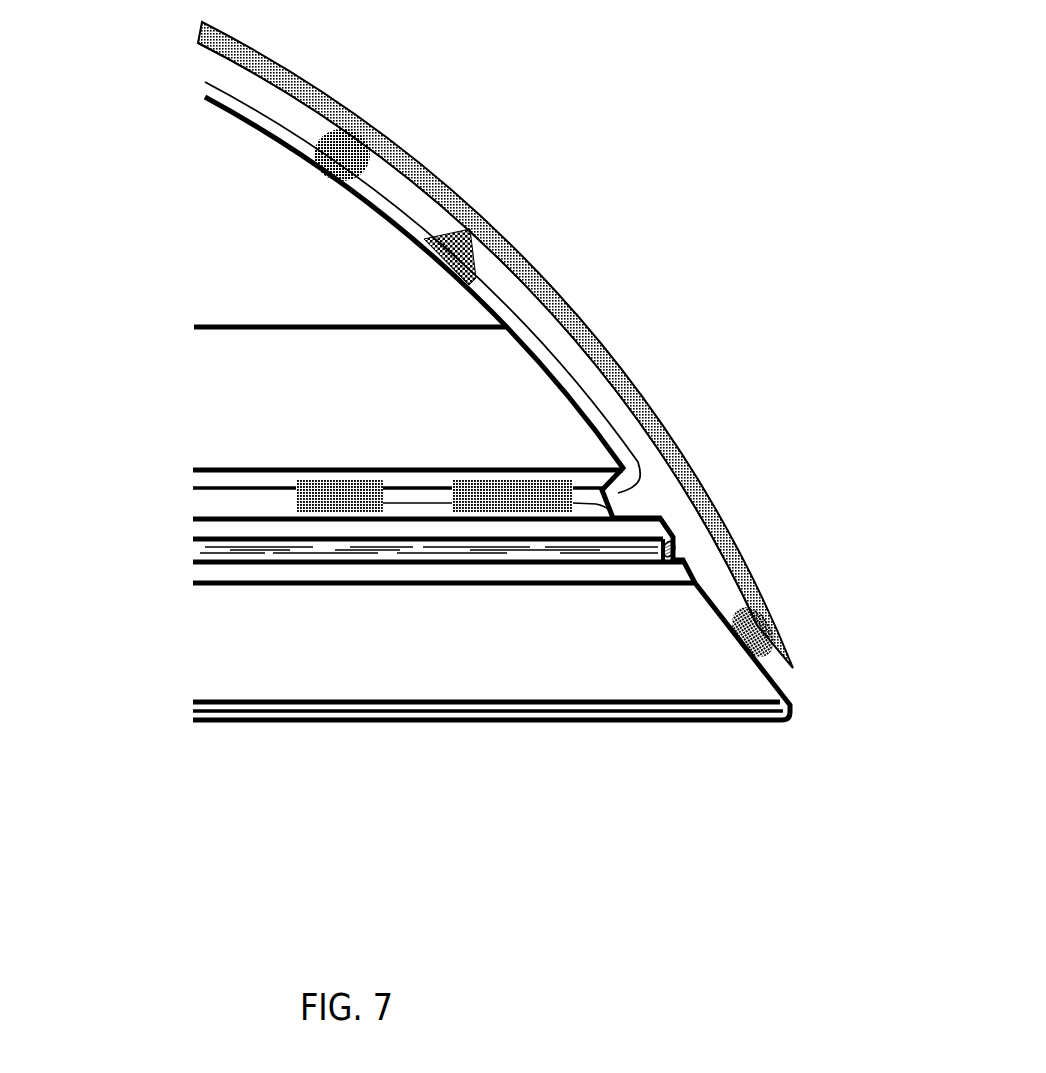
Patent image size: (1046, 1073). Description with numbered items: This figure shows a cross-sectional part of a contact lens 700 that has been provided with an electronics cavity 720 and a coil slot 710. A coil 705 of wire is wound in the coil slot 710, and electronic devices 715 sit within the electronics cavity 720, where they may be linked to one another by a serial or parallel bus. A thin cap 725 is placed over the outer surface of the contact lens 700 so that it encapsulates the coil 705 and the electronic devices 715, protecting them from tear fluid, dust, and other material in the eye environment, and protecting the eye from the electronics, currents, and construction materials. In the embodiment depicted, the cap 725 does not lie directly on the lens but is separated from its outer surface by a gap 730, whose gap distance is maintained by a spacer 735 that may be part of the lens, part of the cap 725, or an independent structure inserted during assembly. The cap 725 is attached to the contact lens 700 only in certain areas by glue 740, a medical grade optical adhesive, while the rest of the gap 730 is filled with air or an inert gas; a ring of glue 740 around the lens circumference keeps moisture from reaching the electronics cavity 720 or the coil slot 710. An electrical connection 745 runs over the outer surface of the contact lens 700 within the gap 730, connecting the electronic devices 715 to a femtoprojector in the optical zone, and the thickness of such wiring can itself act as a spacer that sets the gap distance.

The contact lens 700 is at (365, 281).
The coil 705 is at (684, 548).
The coil slot 710 is at (178, 544).
The electronic devices 715 is at (462, 478).
The electronics cavity 720 is at (180, 518).
The cap 725 is at (405, 147).
The gap 730 is at (542, 326).
The spacer 735 is at (478, 262).
The glue 740 is at (320, 133).
The electrical connection 745 is at (248, 108).